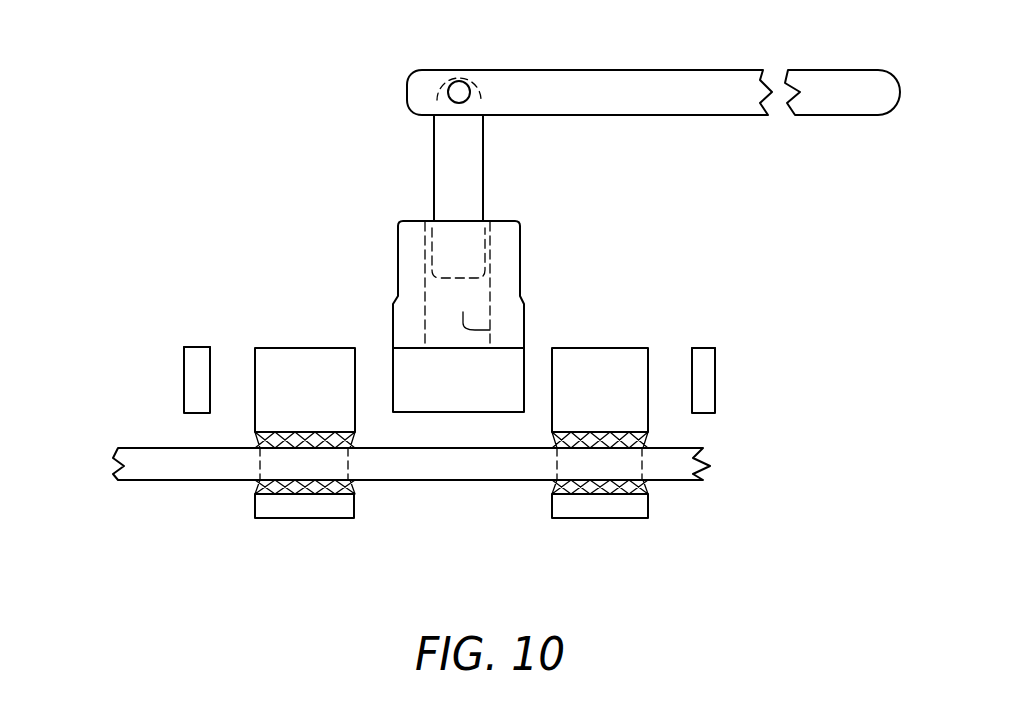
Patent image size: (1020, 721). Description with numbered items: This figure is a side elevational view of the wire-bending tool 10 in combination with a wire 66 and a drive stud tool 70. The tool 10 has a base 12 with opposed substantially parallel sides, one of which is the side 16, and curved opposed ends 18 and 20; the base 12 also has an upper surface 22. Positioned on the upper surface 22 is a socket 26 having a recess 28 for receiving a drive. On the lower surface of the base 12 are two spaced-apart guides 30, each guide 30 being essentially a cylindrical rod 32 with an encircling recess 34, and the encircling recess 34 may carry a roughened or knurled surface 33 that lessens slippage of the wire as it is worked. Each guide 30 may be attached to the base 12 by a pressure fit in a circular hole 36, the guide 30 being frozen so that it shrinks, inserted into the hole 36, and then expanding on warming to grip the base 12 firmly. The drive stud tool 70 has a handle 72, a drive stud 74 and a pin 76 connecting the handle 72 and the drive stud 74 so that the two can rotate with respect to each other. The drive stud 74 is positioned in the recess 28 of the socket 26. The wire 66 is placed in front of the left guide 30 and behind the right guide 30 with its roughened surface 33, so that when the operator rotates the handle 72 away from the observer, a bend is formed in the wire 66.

The tool 10 is at (720, 378).
The base 12 is at (427, 400).
The side 16 is at (467, 359).
The end 18 is at (184, 382).
The end 20 is at (718, 393).
The upper surface 22 is at (197, 347).
The socket 26 is at (523, 313).
The recess 28 is at (463, 312).
The guide 30 is at (313, 519).
The cylindrical rod 32 is at (265, 419).
The roughened surface 33 is at (287, 487).
The encircling recess 34 is at (254, 492).
The hole 36 is at (212, 372).
The wire 66 is at (138, 482).
The drive stud tool 70 is at (653, 111).
The handle 72 is at (838, 97).
The drive stud 74 is at (458, 157).
The pin 76 is at (459, 92).